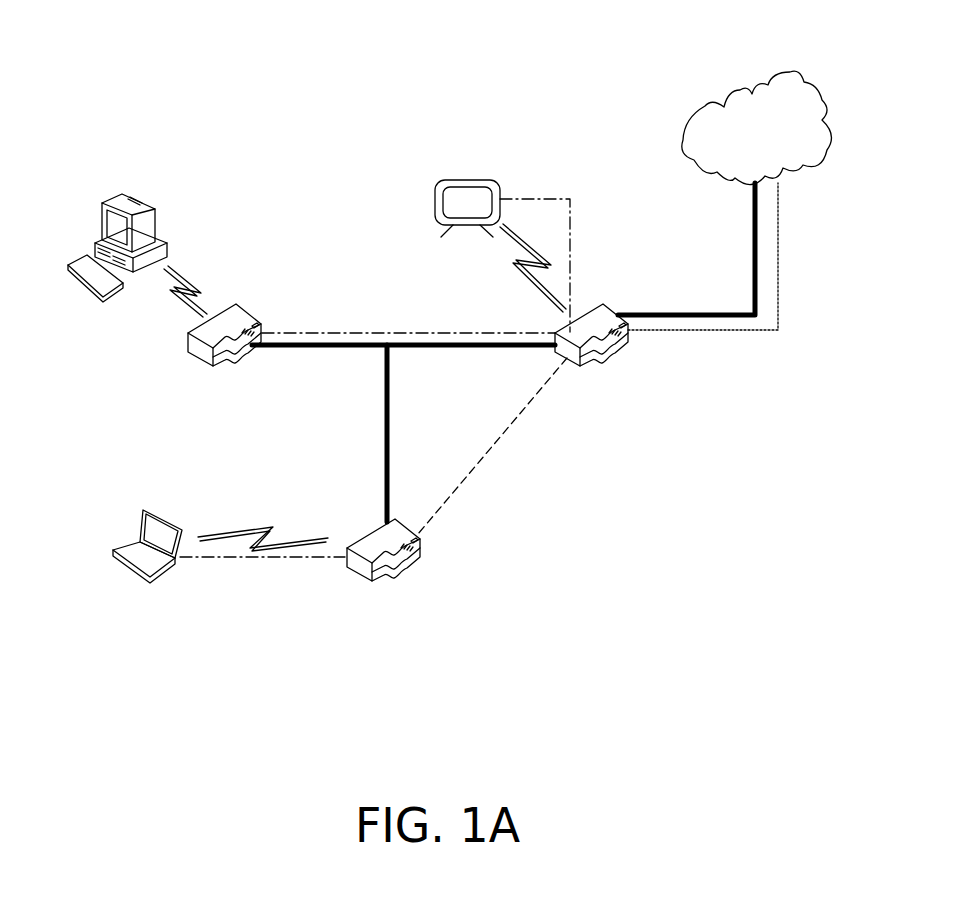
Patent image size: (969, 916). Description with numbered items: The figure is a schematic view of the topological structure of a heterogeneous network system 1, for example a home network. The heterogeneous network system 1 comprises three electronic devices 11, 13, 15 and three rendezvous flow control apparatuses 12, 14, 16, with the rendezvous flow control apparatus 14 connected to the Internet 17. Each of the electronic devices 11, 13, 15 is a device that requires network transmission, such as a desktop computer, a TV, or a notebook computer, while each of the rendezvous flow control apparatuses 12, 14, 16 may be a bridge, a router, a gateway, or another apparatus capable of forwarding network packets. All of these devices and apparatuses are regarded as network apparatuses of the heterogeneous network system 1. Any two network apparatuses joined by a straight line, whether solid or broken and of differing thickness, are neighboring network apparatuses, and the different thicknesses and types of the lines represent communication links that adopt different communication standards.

The heterogeneous network system 1 is at (370, 71).
The electronic device 11 is at (128, 200).
The rendezvous flow control apparatus 12 is at (250, 305).
The electronic device 13 is at (465, 178).
The rendezvous flow control apparatus 14 is at (607, 308).
The electronic device 15 is at (170, 520).
The rendezvous flow control apparatus 16 is at (373, 523).
The Internet 17 is at (713, 102).